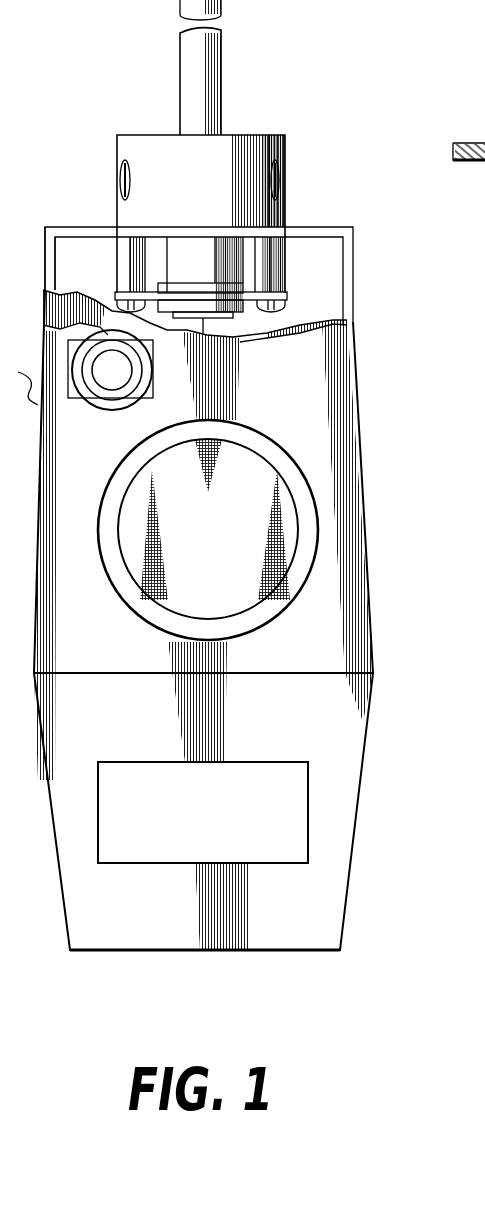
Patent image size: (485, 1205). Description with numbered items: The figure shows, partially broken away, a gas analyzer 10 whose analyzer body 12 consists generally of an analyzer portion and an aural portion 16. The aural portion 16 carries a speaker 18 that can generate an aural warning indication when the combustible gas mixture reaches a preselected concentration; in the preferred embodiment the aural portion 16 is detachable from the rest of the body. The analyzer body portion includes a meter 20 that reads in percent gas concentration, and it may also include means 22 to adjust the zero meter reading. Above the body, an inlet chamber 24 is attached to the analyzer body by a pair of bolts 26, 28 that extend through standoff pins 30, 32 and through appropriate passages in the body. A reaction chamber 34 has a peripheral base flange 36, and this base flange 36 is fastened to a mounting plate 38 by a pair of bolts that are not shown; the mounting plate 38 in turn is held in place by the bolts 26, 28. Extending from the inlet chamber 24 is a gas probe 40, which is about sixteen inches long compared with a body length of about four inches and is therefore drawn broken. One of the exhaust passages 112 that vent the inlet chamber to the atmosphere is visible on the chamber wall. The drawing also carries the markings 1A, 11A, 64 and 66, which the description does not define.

The gas analyzer 10 is at (378, 727).
The analyzer body 12 is at (378, 632).
The aural portion 16 is at (345, 922).
The speaker 18 is at (290, 813).
The meter 20 is at (173, 573).
The means to adjust the zero meter reading 22 is at (104, 376).
The inlet chamber 24 is at (120, 143).
The bolt 26 is at (290, 320).
The bolt 28 is at (140, 305).
The standoff pin 30 is at (287, 272).
The standoff pin 32 is at (117, 253).
The reaction chamber 34 is at (177, 250).
The peripheral base flange 36 is at (243, 282).
The mounting plate 38 is at (46, 258).
The gas probe 40 is at (180, 52).
The section line 1A is at (20, 376).
The slot 11A is at (120, 175).
The exhaust passage 112 is at (282, 168).
The hatched member 64 is at (484, 115).
The member bottom 66 is at (480, 195).